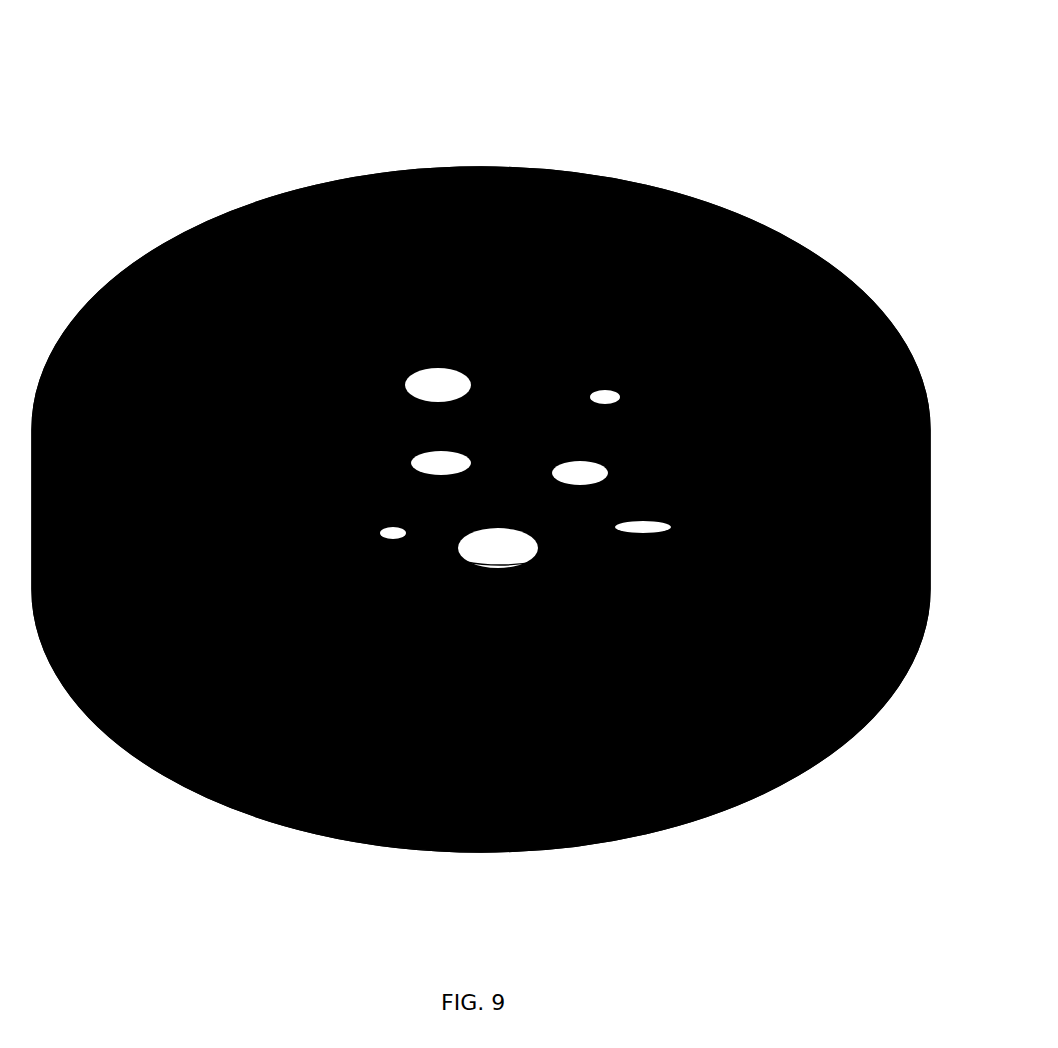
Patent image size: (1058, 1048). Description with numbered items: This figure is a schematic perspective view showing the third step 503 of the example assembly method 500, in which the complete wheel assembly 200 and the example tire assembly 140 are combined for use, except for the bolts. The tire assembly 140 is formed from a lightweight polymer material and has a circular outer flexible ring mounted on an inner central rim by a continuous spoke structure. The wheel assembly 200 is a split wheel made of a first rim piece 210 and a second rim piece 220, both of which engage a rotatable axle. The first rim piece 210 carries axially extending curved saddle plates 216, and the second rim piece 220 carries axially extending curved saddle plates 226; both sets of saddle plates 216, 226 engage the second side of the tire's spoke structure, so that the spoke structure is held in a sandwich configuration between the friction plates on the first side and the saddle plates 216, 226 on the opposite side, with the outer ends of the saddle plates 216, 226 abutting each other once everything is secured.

The assembly method 500 is at (770, 90).
The third step 503 is at (772, 163).
The tire assembly 140 is at (838, 755).
The wheel assembly 200 is at (480, 540).
The first rim piece 210 is at (520, 500).
The saddle plates 216 is at (643, 437).
The second rim piece 220 is at (515, 270).
The saddle plates 226 is at (283, 393).